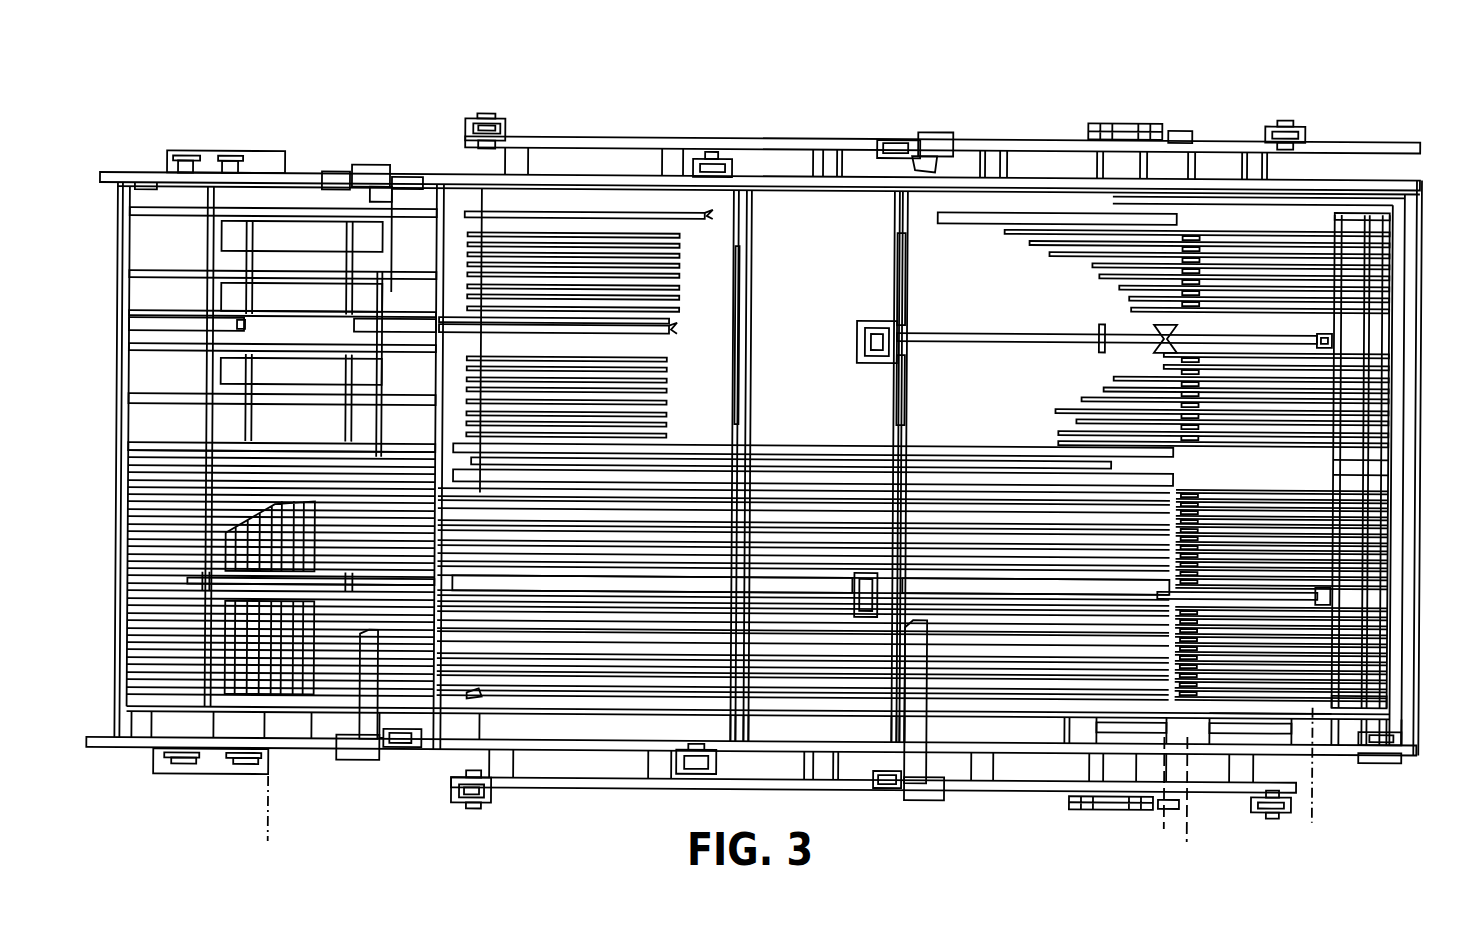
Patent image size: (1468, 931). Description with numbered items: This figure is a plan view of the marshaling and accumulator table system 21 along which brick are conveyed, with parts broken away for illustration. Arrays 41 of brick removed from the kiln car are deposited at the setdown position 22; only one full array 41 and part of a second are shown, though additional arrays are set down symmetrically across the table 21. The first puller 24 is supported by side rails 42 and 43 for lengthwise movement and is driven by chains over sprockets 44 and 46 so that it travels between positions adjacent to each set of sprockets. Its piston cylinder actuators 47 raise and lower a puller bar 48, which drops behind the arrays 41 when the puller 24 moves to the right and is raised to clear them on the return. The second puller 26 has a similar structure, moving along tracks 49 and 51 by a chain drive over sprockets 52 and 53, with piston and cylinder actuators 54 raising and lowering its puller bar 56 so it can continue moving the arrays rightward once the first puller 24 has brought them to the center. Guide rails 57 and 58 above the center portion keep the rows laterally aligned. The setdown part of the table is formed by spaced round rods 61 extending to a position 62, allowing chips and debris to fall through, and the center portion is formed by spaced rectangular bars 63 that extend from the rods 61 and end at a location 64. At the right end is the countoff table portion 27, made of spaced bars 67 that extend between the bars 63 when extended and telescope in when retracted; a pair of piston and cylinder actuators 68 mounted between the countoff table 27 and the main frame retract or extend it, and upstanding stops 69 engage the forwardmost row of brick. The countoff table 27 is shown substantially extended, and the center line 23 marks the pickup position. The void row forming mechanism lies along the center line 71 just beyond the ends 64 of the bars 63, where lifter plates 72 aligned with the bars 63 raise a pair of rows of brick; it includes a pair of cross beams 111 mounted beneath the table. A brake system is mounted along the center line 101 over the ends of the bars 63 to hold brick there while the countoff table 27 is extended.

The marshaling and accumulator table system 21 is at (597, 714).
The setdown position 22 is at (274, 785).
The center line of the pickup position 23 is at (1316, 790).
The first puller 24 is at (367, 758).
The second puller 26 is at (930, 795).
The countoff table portion 27 is at (1388, 668).
The arrays 41 is at (272, 543).
The side rail 42 is at (444, 745).
The side rail 43 is at (452, 178).
The sprockets 44 is at (182, 162).
The sprockets 46 is at (712, 172).
The piston cylinder actuators 47 is at (407, 177).
The puller bar 48 is at (372, 695).
The track 49 is at (1018, 786).
The track 51 is at (1005, 138).
The sprockets 52 is at (497, 121).
The sprockets 53 is at (1150, 131).
The piston and cylinder actuators 54 is at (899, 143).
The puller bar 56 is at (911, 748).
The guide rail 57 is at (676, 327).
The guide rail 58 is at (690, 216).
The round rods 61 is at (147, 517).
The position 62 is at (476, 694).
The rectangular bars 63 is at (672, 370).
The location 64 is at (1170, 685).
The spaced bars 67 is at (1270, 700).
The piston and cylinder actuators 68 is at (965, 329).
The upstanding stops 69 is at (1388, 305).
The center line 71 is at (1193, 815).
The lifter plates 72 is at (1200, 240).
The center line 101 is at (1165, 750).
The cross beams 111 is at (222, 194).